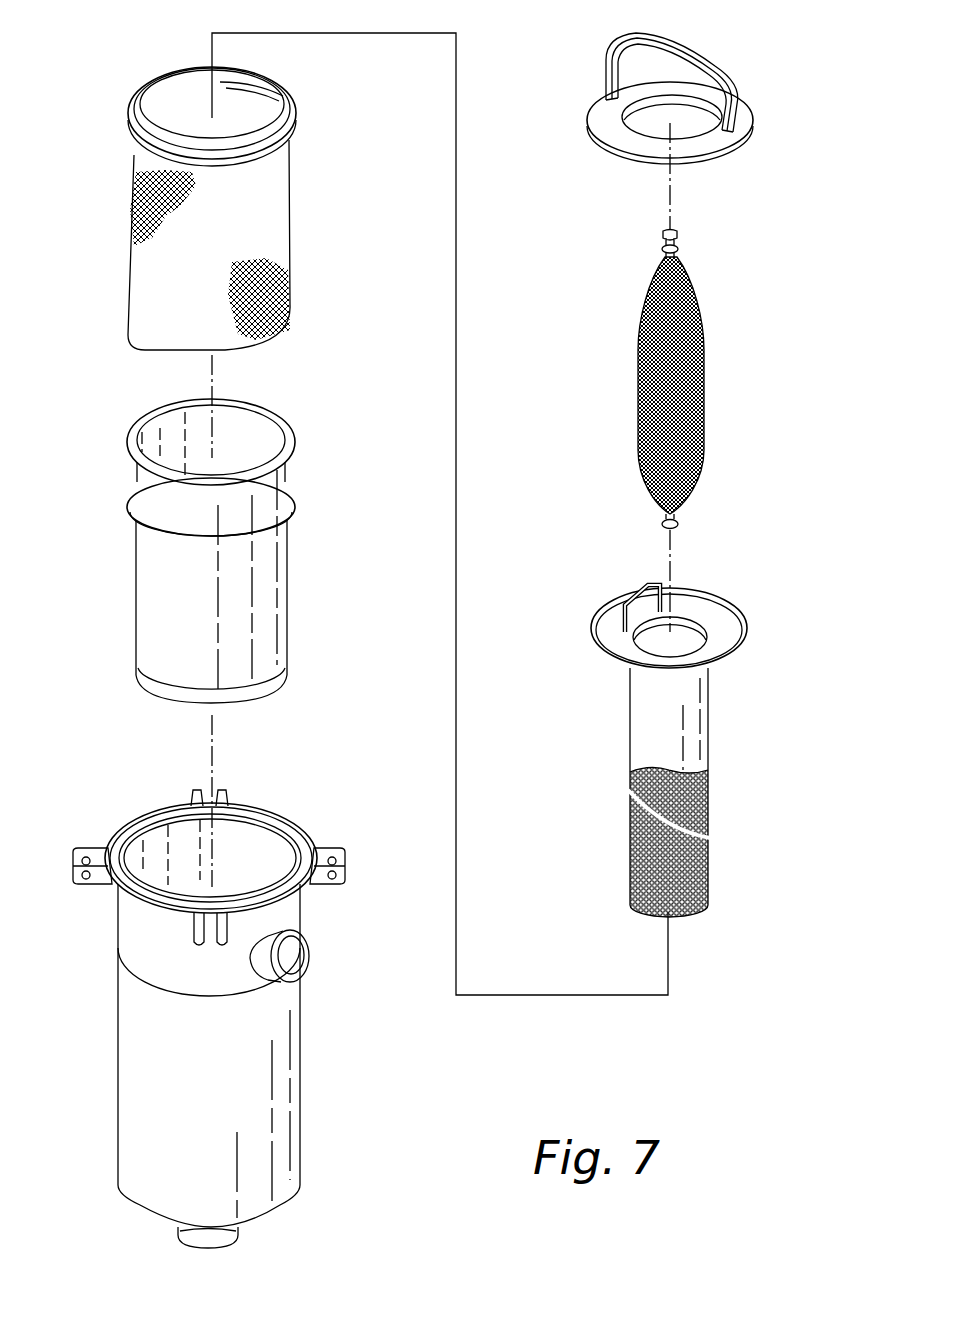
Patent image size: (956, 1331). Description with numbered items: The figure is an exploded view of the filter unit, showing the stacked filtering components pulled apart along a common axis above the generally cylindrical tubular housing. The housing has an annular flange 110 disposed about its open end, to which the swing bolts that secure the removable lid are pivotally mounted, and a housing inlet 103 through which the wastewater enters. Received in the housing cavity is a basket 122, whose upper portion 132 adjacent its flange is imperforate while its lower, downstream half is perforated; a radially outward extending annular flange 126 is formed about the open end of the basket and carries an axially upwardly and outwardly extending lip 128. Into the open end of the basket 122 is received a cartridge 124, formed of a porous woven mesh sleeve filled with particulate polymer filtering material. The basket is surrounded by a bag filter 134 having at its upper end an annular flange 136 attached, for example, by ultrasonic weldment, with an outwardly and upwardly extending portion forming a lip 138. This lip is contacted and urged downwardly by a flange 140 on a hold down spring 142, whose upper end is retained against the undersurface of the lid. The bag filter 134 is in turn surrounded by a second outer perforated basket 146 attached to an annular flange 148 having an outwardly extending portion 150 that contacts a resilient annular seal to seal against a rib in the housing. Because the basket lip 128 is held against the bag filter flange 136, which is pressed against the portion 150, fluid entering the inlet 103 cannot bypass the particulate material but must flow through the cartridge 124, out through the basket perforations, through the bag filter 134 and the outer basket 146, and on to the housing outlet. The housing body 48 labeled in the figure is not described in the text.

The filter housing 48 is at (118, 1117).
The housing inlet 103 is at (298, 958).
The annular flange 110 is at (153, 910).
The basket 122 is at (662, 739).
The cartridge 124 is at (706, 358).
The annular flange 126 is at (618, 640).
The lip 128 is at (730, 602).
The imperforate portion 132 is at (628, 718).
The bag filter 134 is at (289, 205).
The annular flange 136 is at (180, 160).
The lip 138 is at (165, 75).
The flange 140 is at (640, 158).
The hold down spring 142 is at (680, 50).
The outer perforated basket 146 is at (287, 594).
The annular flange 148 is at (270, 493).
The outwardly extending portion 150 is at (283, 420).